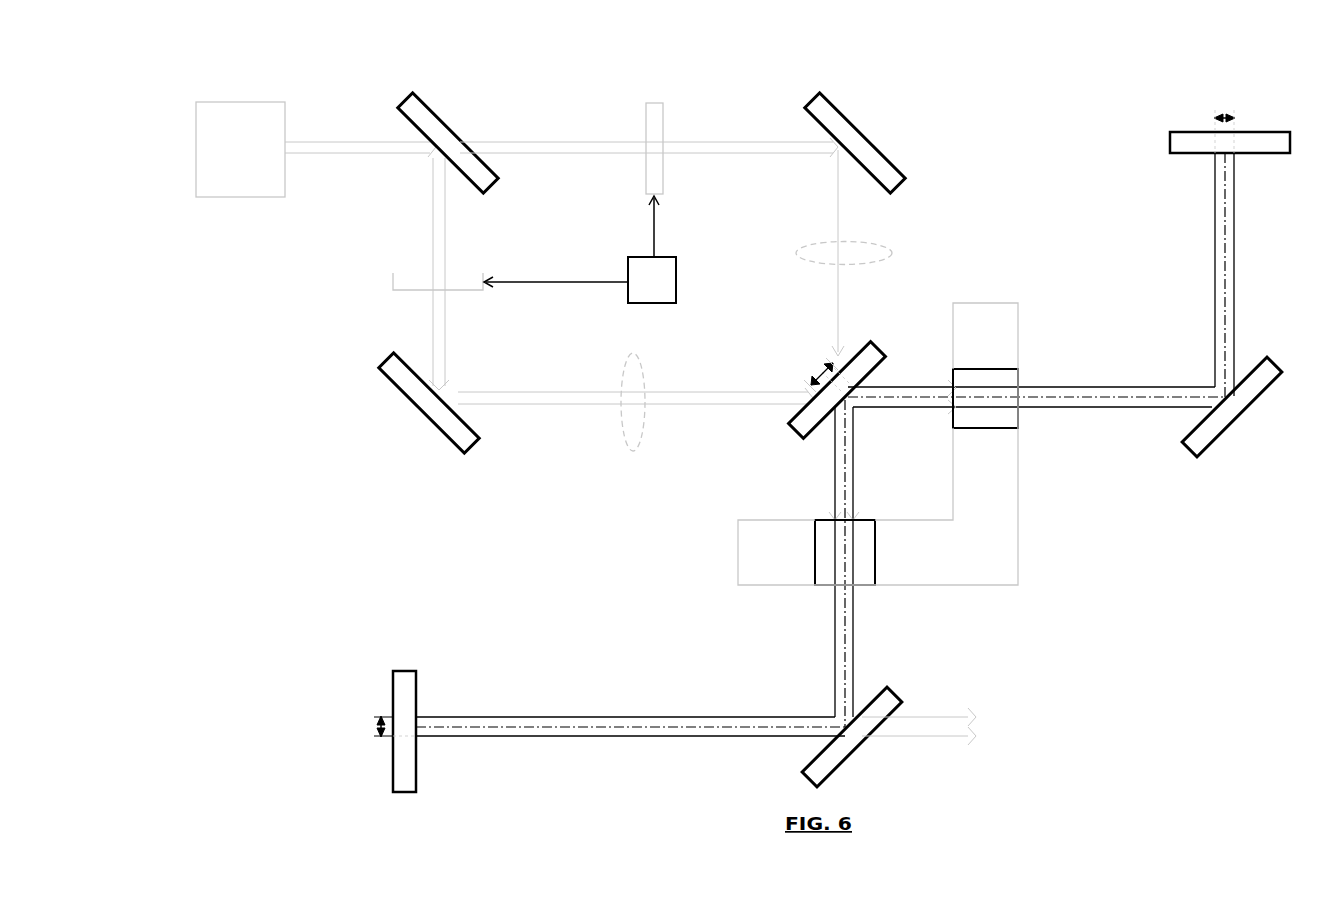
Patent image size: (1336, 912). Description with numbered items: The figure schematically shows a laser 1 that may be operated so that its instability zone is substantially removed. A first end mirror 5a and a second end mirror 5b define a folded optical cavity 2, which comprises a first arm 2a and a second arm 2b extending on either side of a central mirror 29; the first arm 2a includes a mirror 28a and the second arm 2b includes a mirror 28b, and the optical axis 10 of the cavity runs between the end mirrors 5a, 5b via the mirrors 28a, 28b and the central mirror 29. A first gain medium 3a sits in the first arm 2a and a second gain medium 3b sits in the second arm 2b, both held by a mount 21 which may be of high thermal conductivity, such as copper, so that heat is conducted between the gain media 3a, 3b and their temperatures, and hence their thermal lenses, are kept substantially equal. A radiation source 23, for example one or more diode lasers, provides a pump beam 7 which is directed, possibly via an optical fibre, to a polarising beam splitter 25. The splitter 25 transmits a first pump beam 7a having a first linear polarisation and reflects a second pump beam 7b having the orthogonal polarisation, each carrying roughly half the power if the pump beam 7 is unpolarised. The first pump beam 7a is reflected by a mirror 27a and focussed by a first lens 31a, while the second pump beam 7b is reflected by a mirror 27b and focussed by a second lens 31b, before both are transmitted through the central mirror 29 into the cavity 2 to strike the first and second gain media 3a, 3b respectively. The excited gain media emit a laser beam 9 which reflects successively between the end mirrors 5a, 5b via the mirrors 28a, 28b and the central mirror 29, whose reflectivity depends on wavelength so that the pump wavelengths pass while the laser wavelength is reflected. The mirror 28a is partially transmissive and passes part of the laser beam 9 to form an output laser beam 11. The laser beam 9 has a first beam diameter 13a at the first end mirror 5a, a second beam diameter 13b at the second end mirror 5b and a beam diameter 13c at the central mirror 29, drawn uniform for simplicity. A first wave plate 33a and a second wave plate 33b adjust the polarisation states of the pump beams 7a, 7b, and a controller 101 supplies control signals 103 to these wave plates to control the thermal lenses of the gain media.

The laser 1 is at (823, 57).
The optical cavity 2 is at (1085, 443).
The first arm 2a is at (650, 575).
The second arm 2b is at (1097, 251).
The first gain medium 3a is at (876, 538).
The second gain medium 3b is at (1020, 410).
The first end mirror 5a is at (388, 690).
The second end mirror 5b is at (1167, 143).
The pump beam 7 is at (345, 150).
The first pump beam 7a is at (612, 147).
The second pump beam 7b is at (432, 258).
The laser beam 9 is at (660, 740).
The optical axis 10 is at (560, 722).
The output laser beam 11 is at (905, 742).
The first beam diameter 13a is at (375, 722).
The second beam diameter 13b is at (1222, 112).
The beam diameter 13c is at (812, 372).
The mount 21 is at (1020, 500).
The radiation source 23 is at (262, 200).
The polarising beam splitter 25 is at (422, 98).
The mirror 27a is at (878, 138).
The mirror 27b is at (476, 440).
The mirror 28a is at (848, 750).
The mirror 28b is at (1244, 410).
The central mirror 29 is at (878, 350).
The first lens 31a is at (880, 250).
The second lens 31b is at (645, 365).
The first wave plate 33a is at (668, 133).
The second wave plate 33b is at (488, 278).
The controller 101 is at (682, 279).
The control signals 103 is at (658, 215).